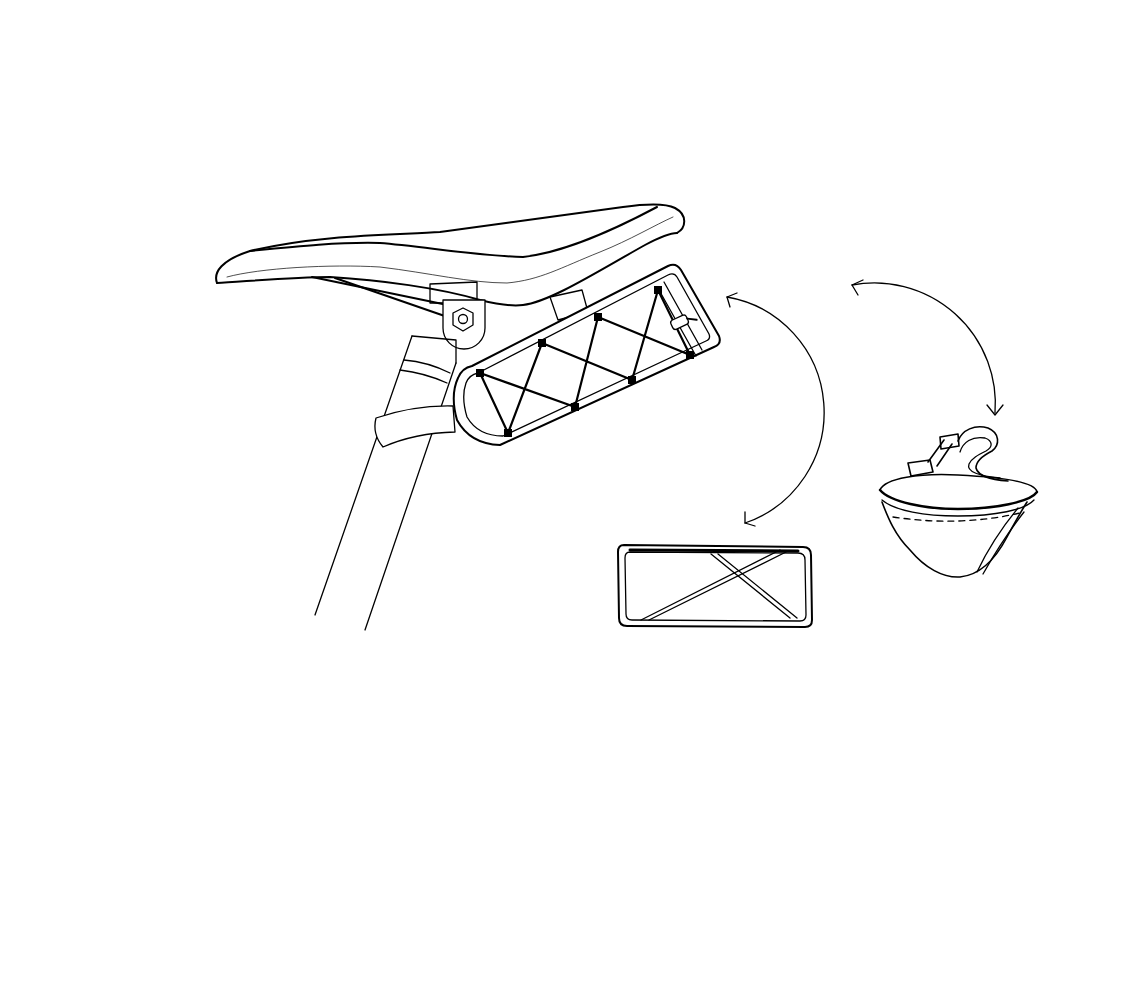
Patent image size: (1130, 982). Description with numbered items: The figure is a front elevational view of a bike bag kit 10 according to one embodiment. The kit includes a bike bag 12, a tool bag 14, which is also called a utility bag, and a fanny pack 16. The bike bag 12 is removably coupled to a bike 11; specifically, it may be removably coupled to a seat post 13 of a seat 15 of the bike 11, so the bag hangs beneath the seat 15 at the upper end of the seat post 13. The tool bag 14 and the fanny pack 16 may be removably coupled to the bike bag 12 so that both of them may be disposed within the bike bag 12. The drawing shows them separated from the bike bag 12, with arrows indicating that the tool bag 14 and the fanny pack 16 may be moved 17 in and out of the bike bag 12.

The bike bag kit 10 is at (975, 102).
The bike 11 is at (173, 347).
The bike bag 12 is at (533, 483).
The seat post 13 is at (382, 563).
The tool bag 14 is at (638, 653).
The seat 15 is at (380, 233).
The fanny pack 16 is at (1053, 513).
The movement 17 is at (977, 333).